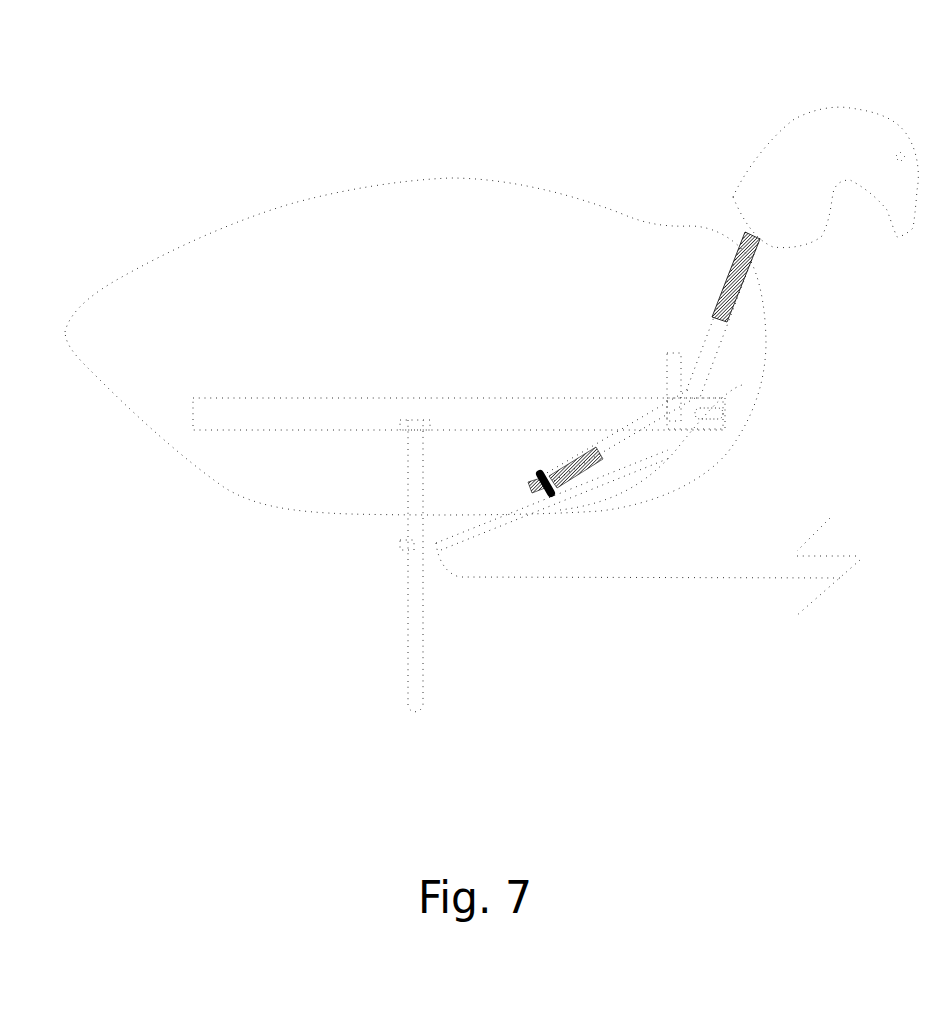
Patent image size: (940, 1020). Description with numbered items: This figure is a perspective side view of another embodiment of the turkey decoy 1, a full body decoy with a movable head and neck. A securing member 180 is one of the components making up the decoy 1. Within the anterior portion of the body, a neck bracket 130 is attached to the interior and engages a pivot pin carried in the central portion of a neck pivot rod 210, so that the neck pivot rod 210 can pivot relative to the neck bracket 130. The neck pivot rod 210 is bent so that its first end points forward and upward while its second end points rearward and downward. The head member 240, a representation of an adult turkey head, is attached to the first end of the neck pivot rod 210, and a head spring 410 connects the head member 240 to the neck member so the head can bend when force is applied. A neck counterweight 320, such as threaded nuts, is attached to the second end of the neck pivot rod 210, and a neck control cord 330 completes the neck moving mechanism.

The turkey decoy 1 is at (158, 116).
The head member 240 is at (817, 110).
The head spring 410 is at (733, 284).
The neck pivot rod 210 is at (703, 346).
The neck bracket 130 is at (673, 378).
The neck control cord 330 is at (682, 450).
The neck counterweight 320 is at (548, 493).
The securing member 180 is at (408, 623).